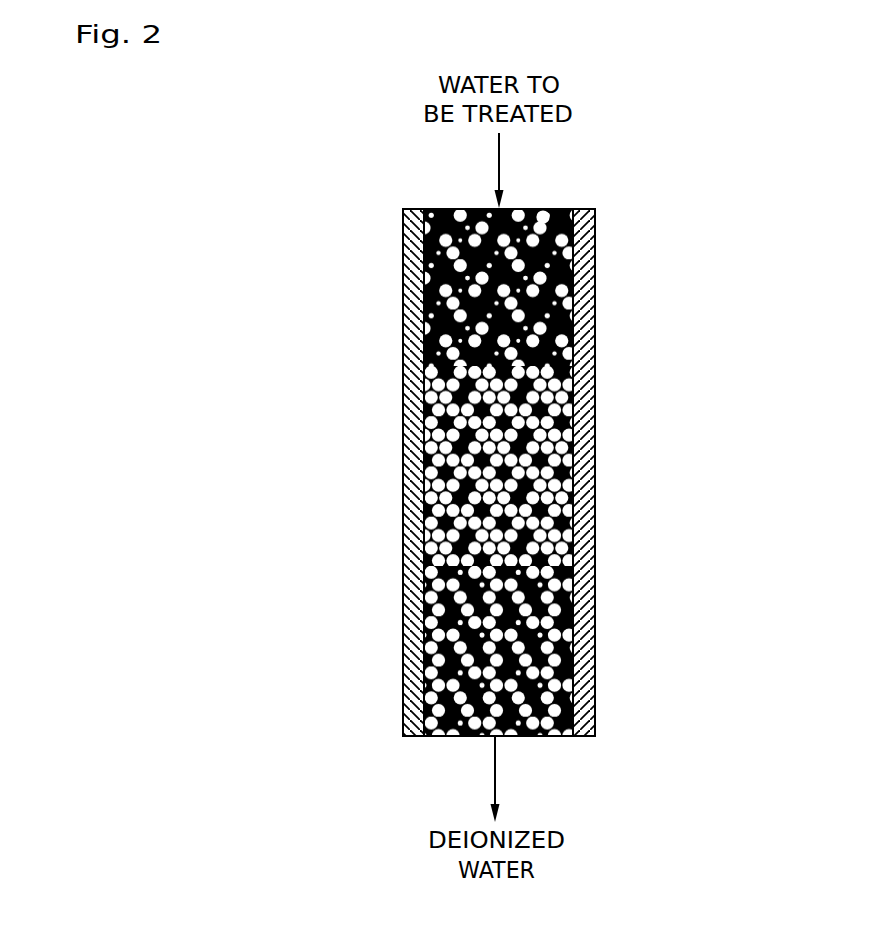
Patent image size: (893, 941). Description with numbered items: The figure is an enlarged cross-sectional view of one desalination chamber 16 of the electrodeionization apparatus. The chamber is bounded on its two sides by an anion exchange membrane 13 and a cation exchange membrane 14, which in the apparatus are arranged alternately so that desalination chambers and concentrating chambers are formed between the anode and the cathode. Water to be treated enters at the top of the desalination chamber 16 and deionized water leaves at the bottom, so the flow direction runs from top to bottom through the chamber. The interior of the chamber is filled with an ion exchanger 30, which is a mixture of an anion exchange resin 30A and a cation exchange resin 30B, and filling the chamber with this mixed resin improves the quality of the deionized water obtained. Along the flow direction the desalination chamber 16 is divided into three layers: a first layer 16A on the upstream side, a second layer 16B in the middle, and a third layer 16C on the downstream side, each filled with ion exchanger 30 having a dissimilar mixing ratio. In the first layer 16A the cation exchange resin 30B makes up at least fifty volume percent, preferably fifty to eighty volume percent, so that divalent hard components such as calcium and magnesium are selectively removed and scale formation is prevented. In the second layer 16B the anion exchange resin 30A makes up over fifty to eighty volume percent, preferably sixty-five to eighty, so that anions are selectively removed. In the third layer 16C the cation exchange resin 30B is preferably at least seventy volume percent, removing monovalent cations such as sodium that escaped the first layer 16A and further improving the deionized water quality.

The anion exchange membrane 13 is at (416, 209).
The cation exchange membrane 14 is at (595, 253).
The desalination chamber 16 is at (359, 531).
The first layer 16A is at (403, 209).
The second layer 16B is at (403, 566).
The third layer 16C is at (403, 736).
The ion exchanger 30 is at (609, 164).
The anion exchange resin 30A is at (560, 209).
The cation exchange resin 30B is at (543, 209).